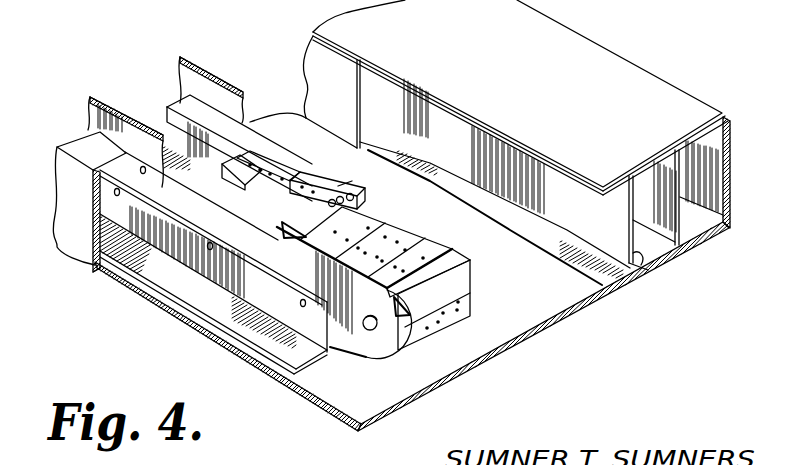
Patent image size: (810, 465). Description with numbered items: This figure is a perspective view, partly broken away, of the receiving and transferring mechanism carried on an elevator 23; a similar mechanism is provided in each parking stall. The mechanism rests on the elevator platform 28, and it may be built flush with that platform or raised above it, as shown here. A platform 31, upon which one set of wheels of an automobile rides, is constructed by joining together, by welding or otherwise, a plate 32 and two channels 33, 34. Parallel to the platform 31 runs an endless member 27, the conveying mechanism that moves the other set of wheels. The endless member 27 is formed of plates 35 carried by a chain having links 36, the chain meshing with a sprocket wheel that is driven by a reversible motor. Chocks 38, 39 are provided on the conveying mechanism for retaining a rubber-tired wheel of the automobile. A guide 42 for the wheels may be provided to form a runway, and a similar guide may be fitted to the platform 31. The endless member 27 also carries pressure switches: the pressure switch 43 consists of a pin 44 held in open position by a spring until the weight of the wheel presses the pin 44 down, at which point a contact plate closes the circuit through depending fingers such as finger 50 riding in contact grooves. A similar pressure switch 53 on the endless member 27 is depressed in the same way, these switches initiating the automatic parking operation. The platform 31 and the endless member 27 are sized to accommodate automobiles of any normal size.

The elevator 23 is at (150, 305).
The endless member 27 is at (428, 232).
The elevator platform 28 is at (57, 185).
The platform 31 is at (654, 110).
The plate 32 is at (589, 178).
The channel 33 is at (636, 255).
The channel 34 is at (676, 245).
The plates 35 is at (282, 215).
The links 36 is at (254, 187).
The chock 38 is at (361, 183).
The chock 39 is at (474, 280).
The guide 42 is at (111, 99).
The pressure switch 43 is at (350, 183).
The pin 44 is at (321, 241).
The finger 50 is at (215, 185).
The pressure switch 53 is at (362, 200).